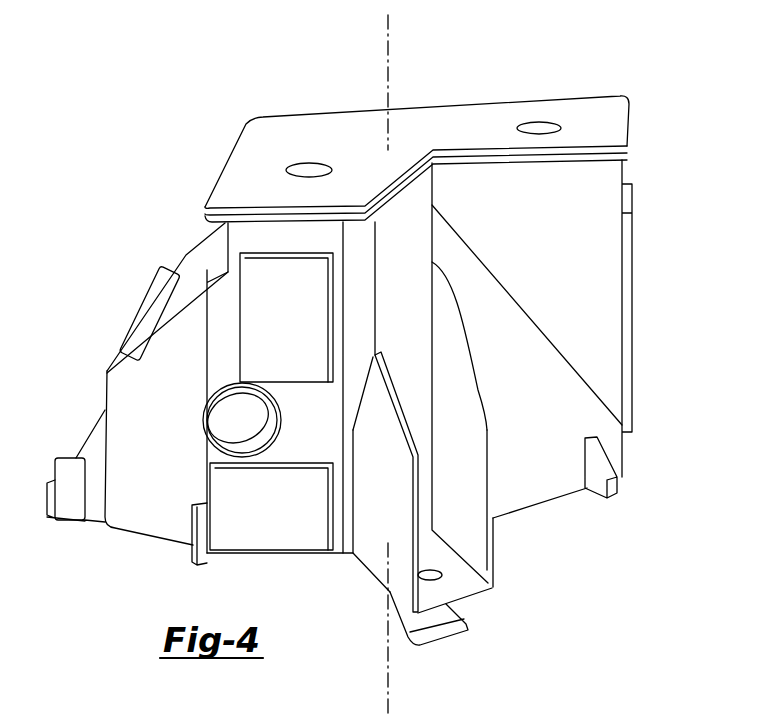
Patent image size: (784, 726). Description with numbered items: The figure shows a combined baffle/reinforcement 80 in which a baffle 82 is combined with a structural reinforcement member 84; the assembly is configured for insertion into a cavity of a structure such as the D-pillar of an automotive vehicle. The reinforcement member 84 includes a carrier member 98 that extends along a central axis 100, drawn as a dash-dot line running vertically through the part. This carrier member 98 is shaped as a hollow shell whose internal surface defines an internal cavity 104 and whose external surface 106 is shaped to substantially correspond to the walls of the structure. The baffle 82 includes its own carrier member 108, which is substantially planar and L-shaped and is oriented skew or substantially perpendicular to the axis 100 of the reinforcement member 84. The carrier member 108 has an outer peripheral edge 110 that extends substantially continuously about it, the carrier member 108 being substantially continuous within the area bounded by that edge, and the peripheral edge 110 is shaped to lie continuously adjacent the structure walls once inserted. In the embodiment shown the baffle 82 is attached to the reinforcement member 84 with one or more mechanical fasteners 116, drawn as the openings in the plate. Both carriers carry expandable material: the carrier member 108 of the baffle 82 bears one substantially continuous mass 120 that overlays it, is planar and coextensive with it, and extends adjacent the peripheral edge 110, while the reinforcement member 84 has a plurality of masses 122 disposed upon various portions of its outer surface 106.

The combined baffle/reinforcement 80 is at (667, 119).
The baffle 82 is at (122, 146).
The structural reinforcement member 84 is at (125, 548).
The carrier member 98 is at (550, 487).
The central axis 100 is at (388, 50).
The internal cavity 104 is at (308, 566).
The external surface 106 is at (538, 395).
The carrier member 108 is at (227, 222).
The outer peripheral edge 110 is at (227, 213).
The mechanical fasteners 116 is at (309, 167).
The mass of expandable material 120 is at (433, 127).
The masses of expandable material 122 is at (298, 339).